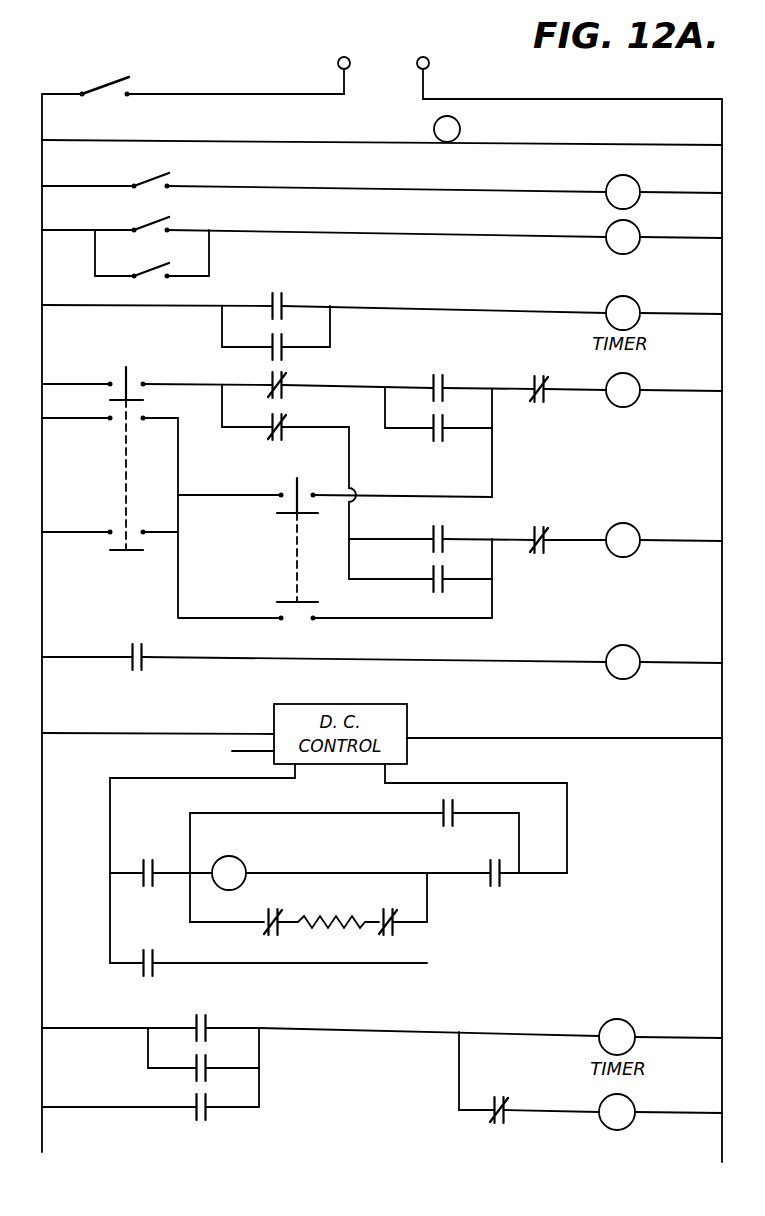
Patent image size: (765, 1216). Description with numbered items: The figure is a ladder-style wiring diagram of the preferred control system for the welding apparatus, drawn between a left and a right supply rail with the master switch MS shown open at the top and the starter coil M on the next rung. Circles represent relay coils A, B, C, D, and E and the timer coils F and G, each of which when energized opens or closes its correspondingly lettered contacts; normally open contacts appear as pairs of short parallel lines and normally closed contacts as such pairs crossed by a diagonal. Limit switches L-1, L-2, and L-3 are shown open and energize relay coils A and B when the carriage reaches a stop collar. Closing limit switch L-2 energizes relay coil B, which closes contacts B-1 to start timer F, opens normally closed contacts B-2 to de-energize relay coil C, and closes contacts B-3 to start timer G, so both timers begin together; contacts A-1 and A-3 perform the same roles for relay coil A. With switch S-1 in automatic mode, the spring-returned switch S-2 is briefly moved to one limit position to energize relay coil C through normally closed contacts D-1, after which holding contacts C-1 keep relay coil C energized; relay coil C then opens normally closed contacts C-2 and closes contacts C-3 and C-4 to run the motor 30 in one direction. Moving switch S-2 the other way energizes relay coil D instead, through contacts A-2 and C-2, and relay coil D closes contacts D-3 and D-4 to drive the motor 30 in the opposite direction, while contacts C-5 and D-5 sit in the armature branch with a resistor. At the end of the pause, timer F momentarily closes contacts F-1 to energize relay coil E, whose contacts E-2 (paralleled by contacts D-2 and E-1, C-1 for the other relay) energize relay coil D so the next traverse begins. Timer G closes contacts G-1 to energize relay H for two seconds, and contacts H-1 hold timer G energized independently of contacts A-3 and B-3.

The master switch MS is at (86, 76).
The motor starter coil M is at (447, 129).
The limit switch L-1 is at (106, 175).
The limit switch L-2 is at (106, 218).
The limit switch L-3 is at (152, 254).
The relay coil A is at (623, 192).
The relay coil B is at (623, 237).
The relay contacts A-1 is at (297, 301).
The relay contacts B-1 is at (296, 342).
The timer F is at (623, 313).
The switch S-1 is at (94, 445).
The relay contacts B-2 is at (294, 380).
The relay contacts A-2 is at (294, 422).
The relay contacts E-1 is at (458, 382).
The relay contacts C-1 is at (458, 423).
The relay contacts D-1 is at (557, 382).
The relay coil C is at (623, 390).
The switch S-2 is at (297, 538).
The relay contacts E-2 is at (458, 534).
The relay contacts C-2 is at (556, 535).
The relay contacts D-2 is at (459, 575).
The relay coil D is at (623, 540).
The relay contacts F-1 is at (155, 652).
The relay coil E is at (623, 662).
The relay contacts C-3 is at (153, 857).
The motor 30 is at (241, 861).
The relay contacts C-4 is at (493, 863).
The relay contacts D-3 is at (469, 808).
The relay contacts C-5 is at (268, 932).
The relay contacts D-5 is at (388, 932).
The relay contacts D-4 is at (154, 945).
The relay contacts A-3 is at (223, 1021).
The timer G is at (617, 1037).
The relay contacts B-3 is at (221, 1062).
The relay contacts H-1 is at (222, 1101).
The contacts G-1 is at (517, 1104).
The relay H is at (617, 1112).